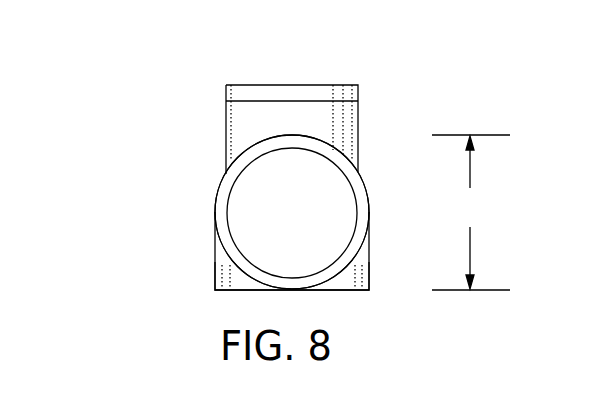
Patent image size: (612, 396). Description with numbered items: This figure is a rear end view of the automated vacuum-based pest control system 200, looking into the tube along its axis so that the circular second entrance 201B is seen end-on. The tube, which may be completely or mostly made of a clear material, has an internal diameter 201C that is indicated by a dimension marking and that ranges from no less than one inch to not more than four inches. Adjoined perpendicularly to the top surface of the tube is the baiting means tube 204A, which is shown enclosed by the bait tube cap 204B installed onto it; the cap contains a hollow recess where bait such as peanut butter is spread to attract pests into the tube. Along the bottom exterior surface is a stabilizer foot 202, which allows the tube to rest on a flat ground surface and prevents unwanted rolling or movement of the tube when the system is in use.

The automated vacuum-based pest control system 200 is at (160, 107).
The bait tube cap 204B is at (327, 92).
The baiting means tube 204A is at (345, 131).
The second entrance 201B is at (222, 196).
The stabilizer foot 202 is at (217, 262).
The internal diameter 201C is at (462, 212).